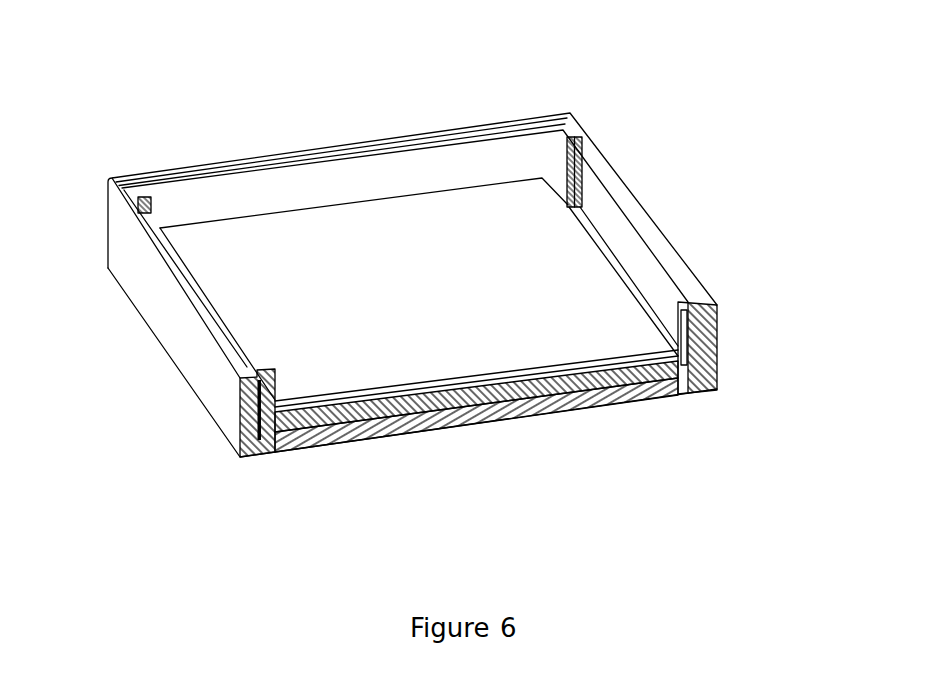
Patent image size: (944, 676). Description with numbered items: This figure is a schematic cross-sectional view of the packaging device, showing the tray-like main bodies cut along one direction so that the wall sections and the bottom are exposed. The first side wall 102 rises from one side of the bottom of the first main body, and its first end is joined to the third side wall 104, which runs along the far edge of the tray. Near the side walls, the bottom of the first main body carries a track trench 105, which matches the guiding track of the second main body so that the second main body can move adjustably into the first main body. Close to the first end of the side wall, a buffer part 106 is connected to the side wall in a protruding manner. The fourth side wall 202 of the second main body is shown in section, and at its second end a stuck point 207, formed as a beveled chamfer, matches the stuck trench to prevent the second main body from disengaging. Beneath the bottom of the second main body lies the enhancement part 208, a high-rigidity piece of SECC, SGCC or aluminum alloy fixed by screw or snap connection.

The first side wall 102 is at (628, 177).
The third side wall 104 is at (346, 143).
The track trench 105 is at (670, 238).
The buffer part 106 is at (564, 131).
The fourth side wall 202 is at (742, 323).
The stuck point 207 is at (697, 299).
The enhancement part 208 is at (660, 385).